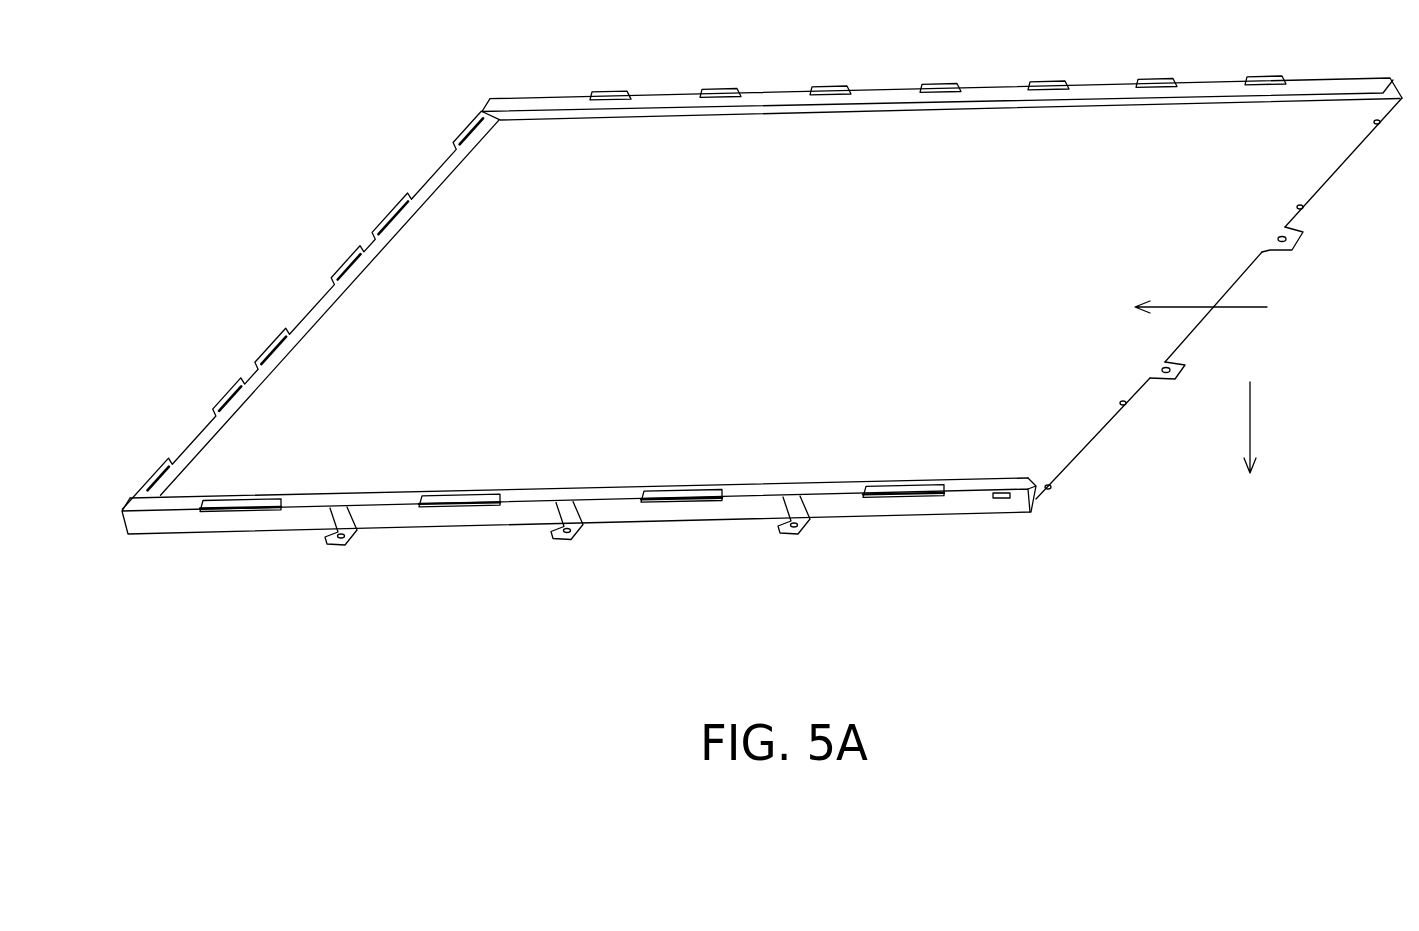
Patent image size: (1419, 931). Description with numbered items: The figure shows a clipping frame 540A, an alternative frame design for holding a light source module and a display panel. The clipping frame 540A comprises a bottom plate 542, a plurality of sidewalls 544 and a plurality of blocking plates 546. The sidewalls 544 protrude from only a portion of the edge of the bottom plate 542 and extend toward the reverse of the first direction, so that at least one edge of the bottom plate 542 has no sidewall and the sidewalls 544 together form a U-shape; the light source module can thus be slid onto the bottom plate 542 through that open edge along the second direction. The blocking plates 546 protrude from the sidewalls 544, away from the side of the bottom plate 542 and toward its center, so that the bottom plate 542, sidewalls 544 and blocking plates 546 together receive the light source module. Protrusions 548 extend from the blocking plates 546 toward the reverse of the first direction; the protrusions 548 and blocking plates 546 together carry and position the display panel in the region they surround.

The clipping frame 540A is at (762, 372).
The bottom plate 542 is at (1062, 443).
The sidewalls 544 is at (613, 559).
The blocking plates 546 is at (1037, 501).
The protrusions 548 is at (875, 493).